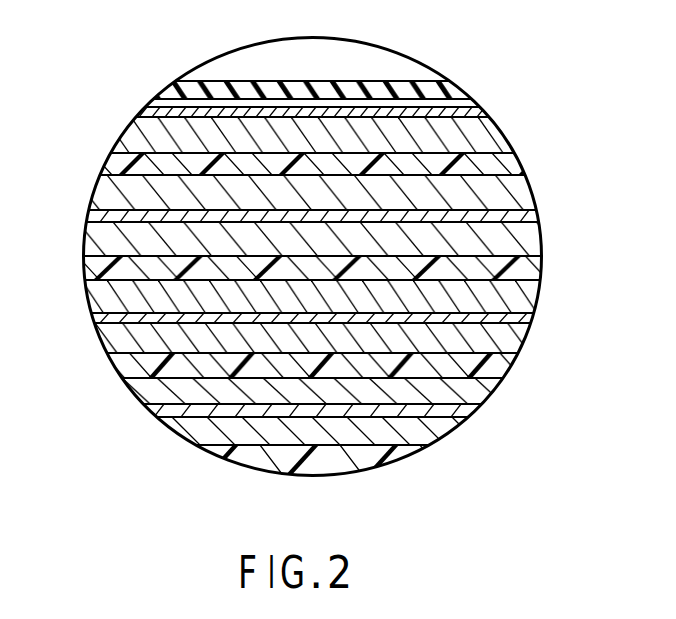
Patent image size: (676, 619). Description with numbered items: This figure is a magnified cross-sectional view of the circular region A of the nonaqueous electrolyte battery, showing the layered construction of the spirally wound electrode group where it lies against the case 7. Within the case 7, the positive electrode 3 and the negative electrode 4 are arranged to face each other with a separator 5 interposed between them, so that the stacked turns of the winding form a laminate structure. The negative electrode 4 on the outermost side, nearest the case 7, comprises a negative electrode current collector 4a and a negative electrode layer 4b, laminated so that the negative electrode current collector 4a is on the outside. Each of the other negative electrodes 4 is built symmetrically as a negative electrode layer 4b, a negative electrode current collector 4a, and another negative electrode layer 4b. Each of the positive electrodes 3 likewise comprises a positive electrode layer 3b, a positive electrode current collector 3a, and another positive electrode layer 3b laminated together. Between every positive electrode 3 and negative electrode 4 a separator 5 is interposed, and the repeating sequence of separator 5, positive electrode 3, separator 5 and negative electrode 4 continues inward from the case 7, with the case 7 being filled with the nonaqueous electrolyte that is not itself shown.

The circular region A is at (213, 78).
The positive electrode 3 is at (360, 333).
The positive electrode current collector 3a is at (512, 220).
The positive electrode layer 3b is at (503, 200).
The negative electrode 4 is at (359, 227).
The negative electrode current collector 4a is at (483, 116).
The negative electrode layer 4b is at (475, 139).
The separator 5 is at (123, 163).
The case 7 is at (448, 91).